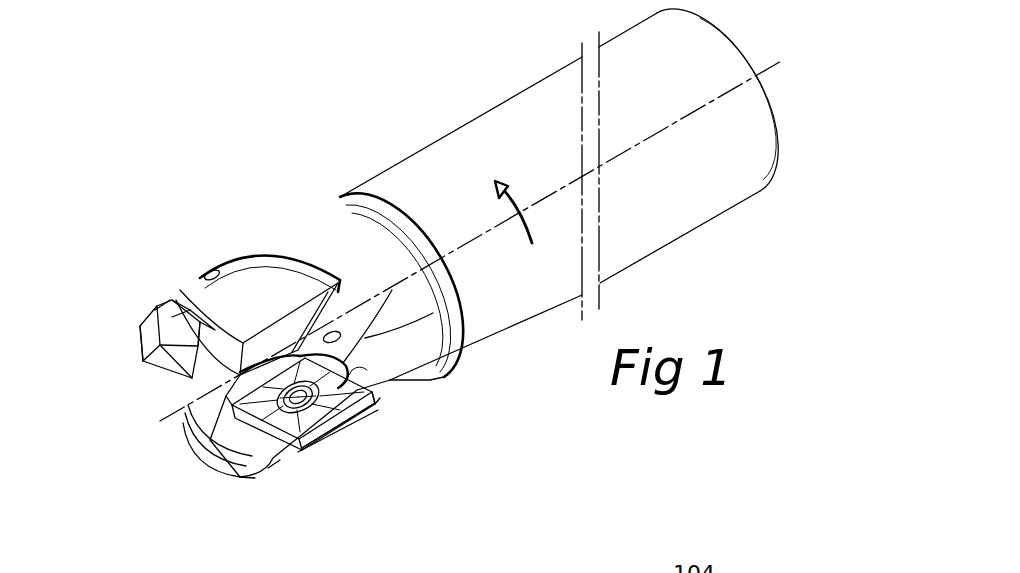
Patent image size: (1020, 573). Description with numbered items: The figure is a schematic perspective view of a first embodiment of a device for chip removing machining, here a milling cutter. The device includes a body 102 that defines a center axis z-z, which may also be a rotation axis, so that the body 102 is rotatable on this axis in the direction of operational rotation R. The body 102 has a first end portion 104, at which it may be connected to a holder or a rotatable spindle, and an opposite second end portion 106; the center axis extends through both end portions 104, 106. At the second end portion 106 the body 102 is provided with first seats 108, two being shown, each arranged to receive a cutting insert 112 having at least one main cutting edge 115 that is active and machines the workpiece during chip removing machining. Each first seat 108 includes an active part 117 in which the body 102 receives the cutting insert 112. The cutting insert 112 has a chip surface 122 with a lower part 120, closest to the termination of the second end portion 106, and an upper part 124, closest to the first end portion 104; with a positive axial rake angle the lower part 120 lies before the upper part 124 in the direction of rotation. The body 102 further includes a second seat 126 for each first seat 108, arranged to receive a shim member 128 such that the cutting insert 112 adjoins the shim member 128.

The body 102 is at (462, 157).
The first end portion 104 is at (731, 218).
The second end portion 106 is at (247, 210).
The first seat 108 is at (139, 326).
The cutting insert 112 is at (136, 353).
The main cutting edge 115 is at (337, 432).
The active part 117 is at (340, 438).
The lower part of the chip surface 120 is at (242, 414).
The chip surface 122 is at (337, 392).
The upper part of the chip surface 124 is at (341, 362).
The second seat 126 is at (160, 303).
The shim member 128 is at (173, 317).